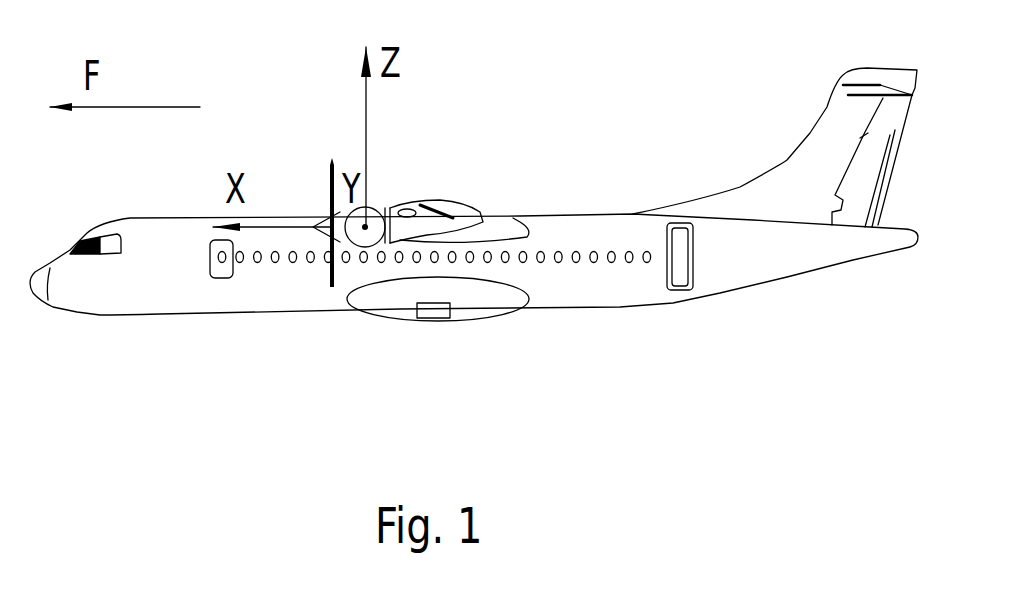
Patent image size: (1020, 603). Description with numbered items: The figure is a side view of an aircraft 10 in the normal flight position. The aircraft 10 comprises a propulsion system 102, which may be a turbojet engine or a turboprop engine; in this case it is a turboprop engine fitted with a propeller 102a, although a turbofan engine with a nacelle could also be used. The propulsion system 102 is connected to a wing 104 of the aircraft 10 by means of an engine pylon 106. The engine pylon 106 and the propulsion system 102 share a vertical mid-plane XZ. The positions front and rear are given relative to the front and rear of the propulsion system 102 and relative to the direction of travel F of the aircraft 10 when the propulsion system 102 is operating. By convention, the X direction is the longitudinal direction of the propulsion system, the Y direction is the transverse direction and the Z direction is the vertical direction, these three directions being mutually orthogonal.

The aircraft 10 is at (572, 160).
The propulsion system 102 is at (372, 265).
The propeller 102a is at (327, 173).
The wing 104 is at (433, 203).
The engine pylon 106 is at (425, 236).